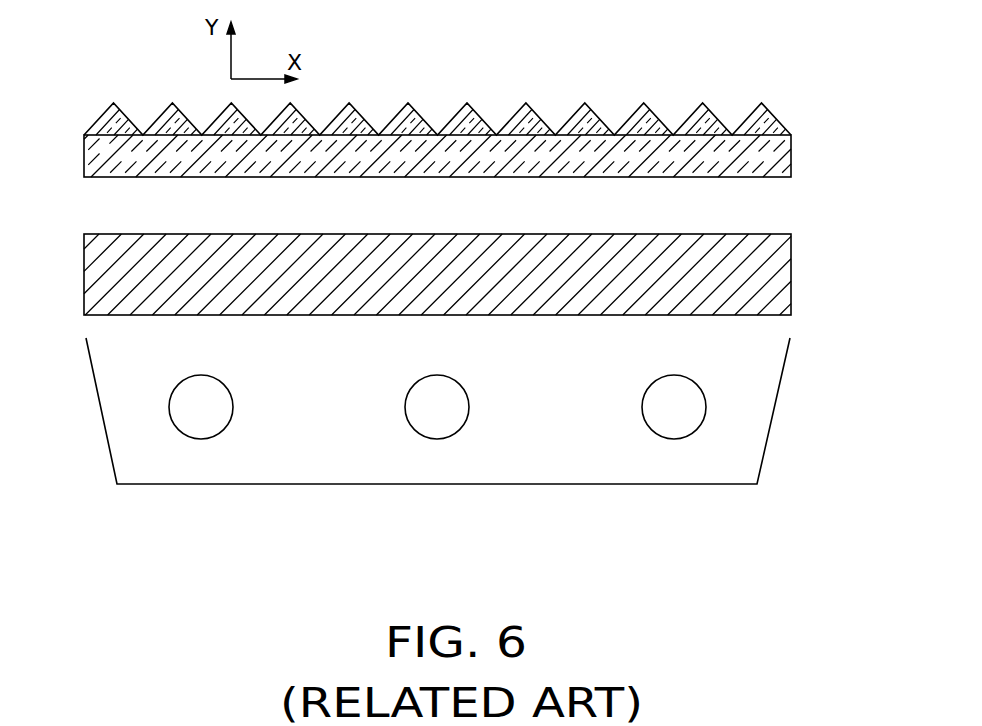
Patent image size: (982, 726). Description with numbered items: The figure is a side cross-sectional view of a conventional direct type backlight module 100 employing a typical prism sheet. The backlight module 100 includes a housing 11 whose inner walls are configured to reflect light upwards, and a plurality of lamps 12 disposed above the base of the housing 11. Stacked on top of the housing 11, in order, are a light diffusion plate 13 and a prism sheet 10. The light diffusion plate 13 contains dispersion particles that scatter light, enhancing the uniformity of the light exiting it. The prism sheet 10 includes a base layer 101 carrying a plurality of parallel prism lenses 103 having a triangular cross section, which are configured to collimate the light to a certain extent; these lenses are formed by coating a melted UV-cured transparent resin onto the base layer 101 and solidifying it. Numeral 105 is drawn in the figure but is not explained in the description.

The backlight module 100 is at (568, 72).
The prism sheet 10 is at (844, 87).
The base layer 101 is at (738, 167).
The prism lenses 103 is at (768, 125).
The prism surface 105 is at (105, 113).
The light diffusion plate 13 is at (782, 278).
The housing 11 is at (780, 390).
The lamps 12 is at (681, 425).